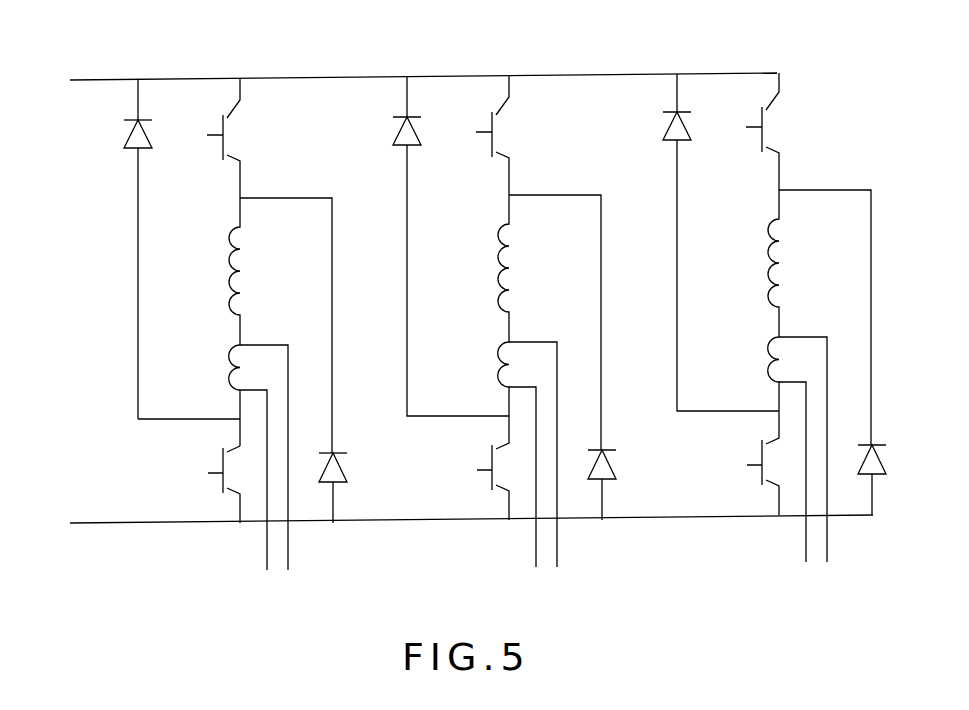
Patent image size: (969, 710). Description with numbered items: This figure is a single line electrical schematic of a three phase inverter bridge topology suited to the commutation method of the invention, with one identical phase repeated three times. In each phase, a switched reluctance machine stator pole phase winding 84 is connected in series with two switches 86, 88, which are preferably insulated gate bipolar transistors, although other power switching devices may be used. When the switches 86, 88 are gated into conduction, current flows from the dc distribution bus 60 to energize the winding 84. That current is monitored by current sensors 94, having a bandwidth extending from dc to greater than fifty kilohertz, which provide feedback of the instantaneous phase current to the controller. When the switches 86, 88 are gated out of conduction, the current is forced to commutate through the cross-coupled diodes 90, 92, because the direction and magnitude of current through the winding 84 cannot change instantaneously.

The dc distribution bus 60 is at (92, 80).
The diode 90 is at (132, 138).
The switch 86 is at (226, 146).
The stator pole phase winding 84 is at (227, 287).
The current sensor 94 is at (227, 363).
The switch 88 is at (221, 463).
The diode 92 is at (346, 466).